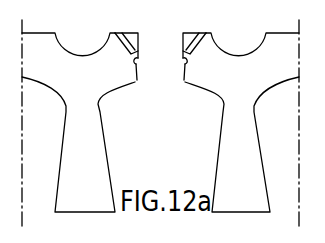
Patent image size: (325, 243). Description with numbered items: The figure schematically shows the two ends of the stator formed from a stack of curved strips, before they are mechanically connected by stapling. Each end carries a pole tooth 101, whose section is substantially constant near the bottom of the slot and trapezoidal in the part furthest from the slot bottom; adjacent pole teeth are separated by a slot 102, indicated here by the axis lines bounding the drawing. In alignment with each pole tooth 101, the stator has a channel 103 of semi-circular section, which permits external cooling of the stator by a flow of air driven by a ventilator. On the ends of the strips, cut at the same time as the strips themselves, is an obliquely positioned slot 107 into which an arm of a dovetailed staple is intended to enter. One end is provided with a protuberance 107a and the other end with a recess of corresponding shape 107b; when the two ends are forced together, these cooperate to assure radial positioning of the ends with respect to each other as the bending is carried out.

The pole tooth 101 is at (94, 146).
The slot 102 is at (53, 137).
The channel 103 is at (73, 47).
The oblique slot 107 is at (140, 28).
The protuberance 107a is at (184, 66).
The recess 107b is at (137, 80).